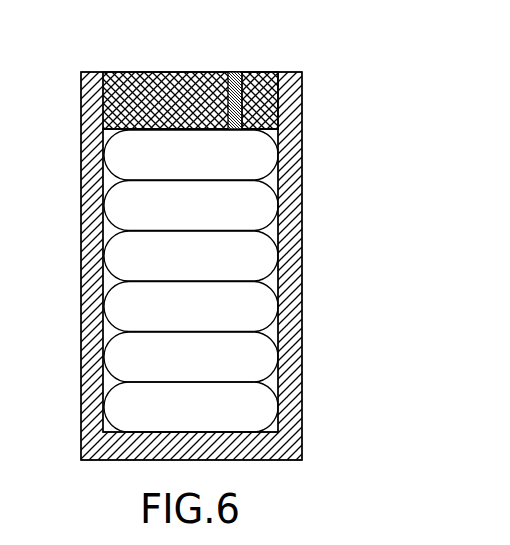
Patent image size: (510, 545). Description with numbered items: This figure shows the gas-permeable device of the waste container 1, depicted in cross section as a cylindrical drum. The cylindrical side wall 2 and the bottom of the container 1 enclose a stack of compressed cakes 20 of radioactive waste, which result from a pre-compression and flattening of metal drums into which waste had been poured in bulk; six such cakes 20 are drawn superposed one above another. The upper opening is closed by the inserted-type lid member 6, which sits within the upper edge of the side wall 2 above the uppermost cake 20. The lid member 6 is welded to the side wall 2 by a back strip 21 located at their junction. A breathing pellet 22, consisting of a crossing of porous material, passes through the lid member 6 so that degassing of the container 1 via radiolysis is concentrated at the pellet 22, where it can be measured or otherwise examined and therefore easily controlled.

The container 1 is at (260, 231).
The cylindrical side wall 2 is at (290, 205).
The lid member 6 is at (122, 83).
The cakes 20 is at (260, 310).
The back strip 21 is at (278, 80).
The breathing pellet 22 is at (235, 77).